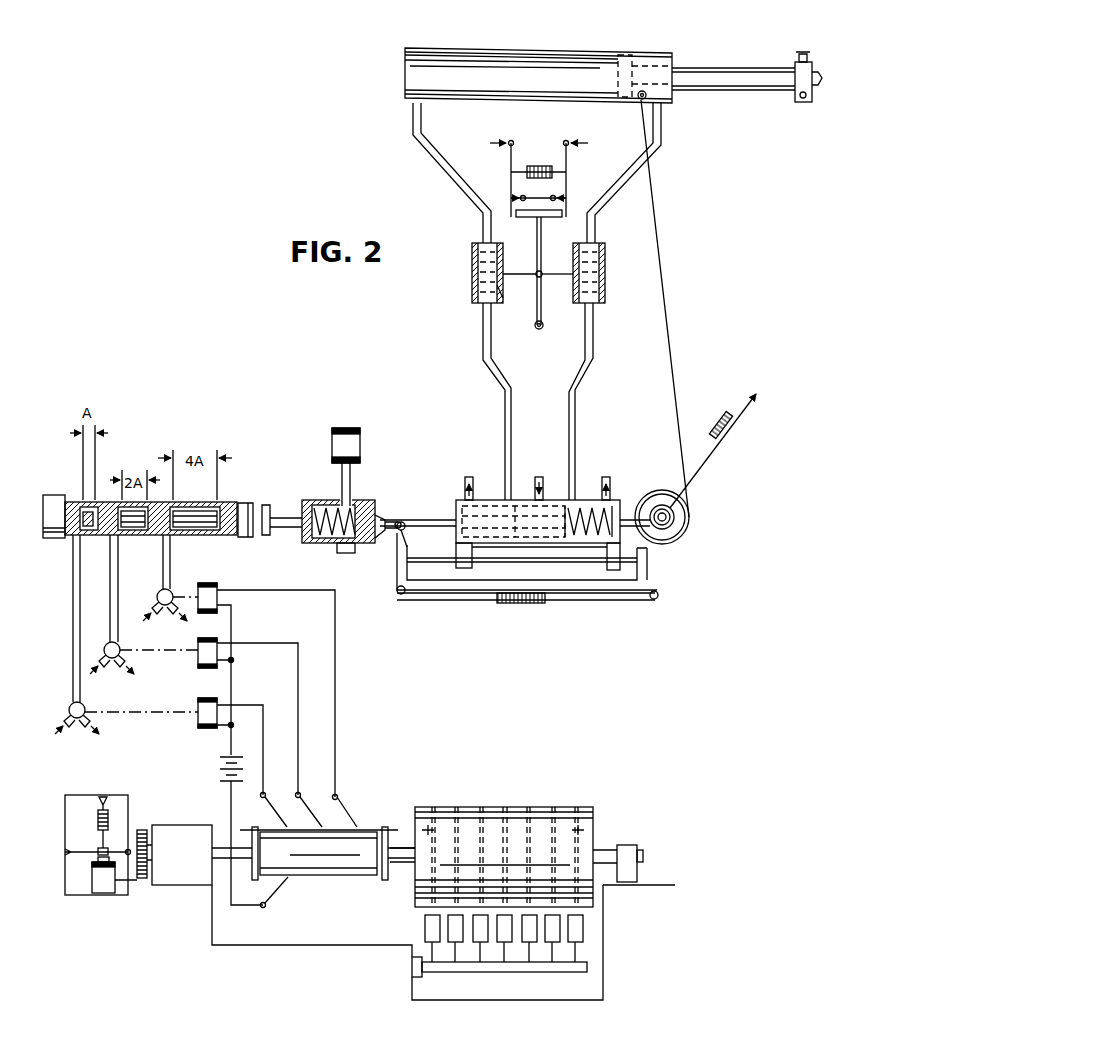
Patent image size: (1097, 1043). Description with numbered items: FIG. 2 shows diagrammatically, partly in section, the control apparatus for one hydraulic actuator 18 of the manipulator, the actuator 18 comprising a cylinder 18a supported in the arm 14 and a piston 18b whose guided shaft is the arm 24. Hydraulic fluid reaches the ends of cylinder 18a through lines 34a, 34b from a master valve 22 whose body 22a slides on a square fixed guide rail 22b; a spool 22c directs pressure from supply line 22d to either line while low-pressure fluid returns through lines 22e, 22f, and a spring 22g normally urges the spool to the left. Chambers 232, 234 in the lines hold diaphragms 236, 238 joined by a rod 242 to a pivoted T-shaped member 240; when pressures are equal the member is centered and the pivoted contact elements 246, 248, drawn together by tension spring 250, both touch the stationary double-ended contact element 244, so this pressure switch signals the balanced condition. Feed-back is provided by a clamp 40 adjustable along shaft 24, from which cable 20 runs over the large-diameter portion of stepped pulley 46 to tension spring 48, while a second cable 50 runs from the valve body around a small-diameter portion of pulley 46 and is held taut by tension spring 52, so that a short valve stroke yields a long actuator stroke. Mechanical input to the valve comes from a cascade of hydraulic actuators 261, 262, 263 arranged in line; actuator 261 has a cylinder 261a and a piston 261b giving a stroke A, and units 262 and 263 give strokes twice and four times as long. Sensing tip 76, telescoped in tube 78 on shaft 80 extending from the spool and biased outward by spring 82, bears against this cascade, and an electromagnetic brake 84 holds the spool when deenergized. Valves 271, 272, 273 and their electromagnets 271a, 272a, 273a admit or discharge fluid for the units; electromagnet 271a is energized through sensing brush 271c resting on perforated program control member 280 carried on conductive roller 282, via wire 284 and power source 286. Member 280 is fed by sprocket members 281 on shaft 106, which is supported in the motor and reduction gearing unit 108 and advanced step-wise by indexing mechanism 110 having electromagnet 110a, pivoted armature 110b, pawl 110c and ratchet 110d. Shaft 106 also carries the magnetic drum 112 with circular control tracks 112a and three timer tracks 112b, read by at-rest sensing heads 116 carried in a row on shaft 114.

The arm 14 is at (605, 56).
The hydraulic actuator 18 is at (520, 70).
The cylinder 18a is at (512, 49).
The piston 18b is at (626, 55).
The shaft 24 is at (714, 68).
The clamp 40 is at (800, 78).
The hydraulic line 34a is at (413, 121).
The hydraulic line 34b is at (662, 123).
The cable 20 is at (655, 222).
The tension spring 250 is at (536, 167).
The pivoted contact element 246 is at (511, 160).
The pivoted contact element 248 is at (566, 177).
The stationary double-ended contact element 244 is at (530, 197).
The chamber 232 is at (472, 258).
The chamber 234 is at (605, 283).
The diaphragm 236 is at (503, 293).
The rod 242 is at (522, 272).
The diaphragm 238 is at (573, 269).
The pivoted T-shaped member 240 is at (541, 311).
The tension spring 48 is at (728, 416).
The cable 50 is at (660, 493).
The stepped pulley 46 is at (690, 514).
The master valve 22 is at (519, 527).
The valve body 22a is at (490, 500).
The fixed guide rail 22b is at (580, 565).
The spool 22c is at (524, 506).
The supply line 22d is at (542, 480).
The return line 22e is at (466, 476).
The return line 22f is at (610, 479).
The spring 22g is at (601, 512).
The tension spring 52 is at (506, 603).
The sensing tip 76 is at (285, 518).
The tube 78 is at (320, 500).
The shaft 80 is at (391, 516).
The spring 82 is at (320, 540).
The electromagnetic brake 84 is at (332, 432).
The hydraulic actuator 261 is at (156, 513).
The cylinder 261a is at (68, 500).
The piston 261b is at (88, 512).
The hydraulic actuator unit 262 is at (135, 535).
The hydraulic actuator unit 263 is at (195, 535).
The valve 271 is at (75, 727).
The valve 272 is at (112, 665).
The valve 273 is at (165, 612).
The electromagnet 271a is at (200, 720).
The electromagnet 272a is at (200, 658).
The electromagnet 273a is at (224, 598).
The sensing brush 271c is at (333, 792).
The electric power source 286 is at (220, 773).
The wire 284 is at (242, 903).
The perforated program control member 280 is at (384, 828).
The sprocket members 281 is at (254, 827).
The conductive roller 282 is at (332, 865).
The shaft 106 is at (224, 848).
The motor unit 108 is at (196, 861).
The indexing mechanism 110 is at (124, 836).
The electromagnet 110a is at (108, 880).
The pivoted armature 110b is at (83, 855).
The pawl 110c is at (135, 840).
The ratchet 110d is at (145, 876).
The master program storage member 112 is at (532, 829).
The control tracks 112a is at (496, 807).
The control tracks 112b is at (580, 807).
The sensing heads 116 is at (440, 918).
The shaft 114 is at (497, 963).